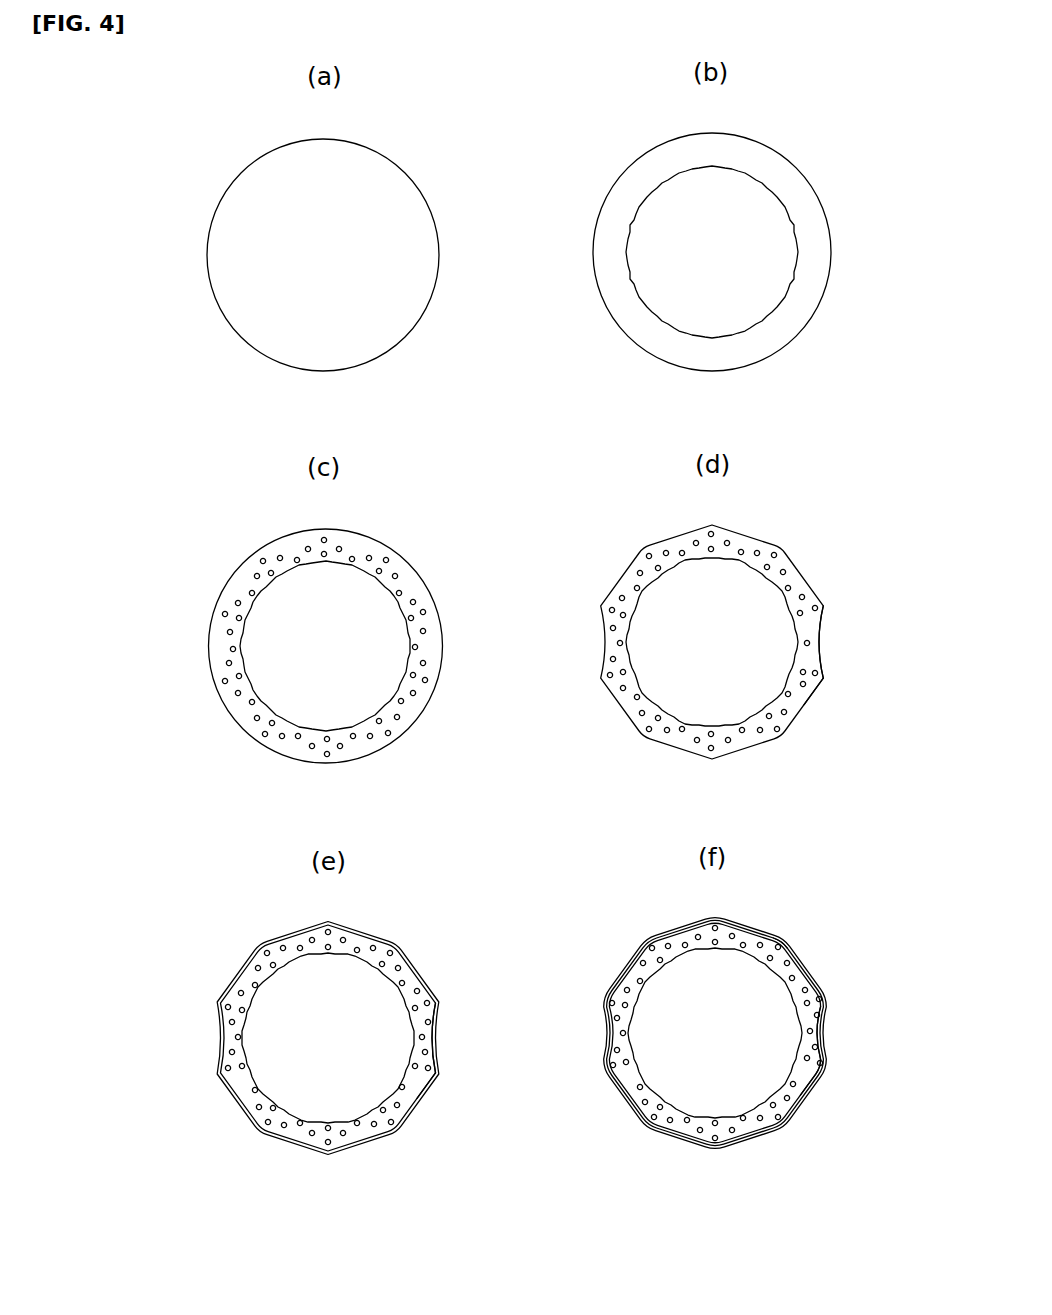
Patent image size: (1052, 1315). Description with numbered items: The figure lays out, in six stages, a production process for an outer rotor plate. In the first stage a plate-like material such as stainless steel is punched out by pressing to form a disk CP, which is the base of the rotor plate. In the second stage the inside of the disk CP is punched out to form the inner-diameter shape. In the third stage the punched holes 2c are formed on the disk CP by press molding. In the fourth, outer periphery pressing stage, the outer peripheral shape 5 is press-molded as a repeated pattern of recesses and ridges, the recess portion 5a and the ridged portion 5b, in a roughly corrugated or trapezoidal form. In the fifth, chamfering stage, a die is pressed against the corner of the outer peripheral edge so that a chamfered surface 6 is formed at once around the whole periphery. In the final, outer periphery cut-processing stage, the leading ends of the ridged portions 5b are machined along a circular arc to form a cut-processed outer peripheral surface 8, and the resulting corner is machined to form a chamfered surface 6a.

The disk CP is at (250, 149).
The punched holes 2c is at (396, 574).
The outer peripheral shape 5 is at (833, 597).
The recess portion 5a is at (820, 640).
The ridged portion 5b is at (825, 678).
The chamfered surface 6 is at (401, 951).
The chamfered surface 6a is at (780, 937).
The cut-processed outer peripheral surface 8 is at (787, 939).